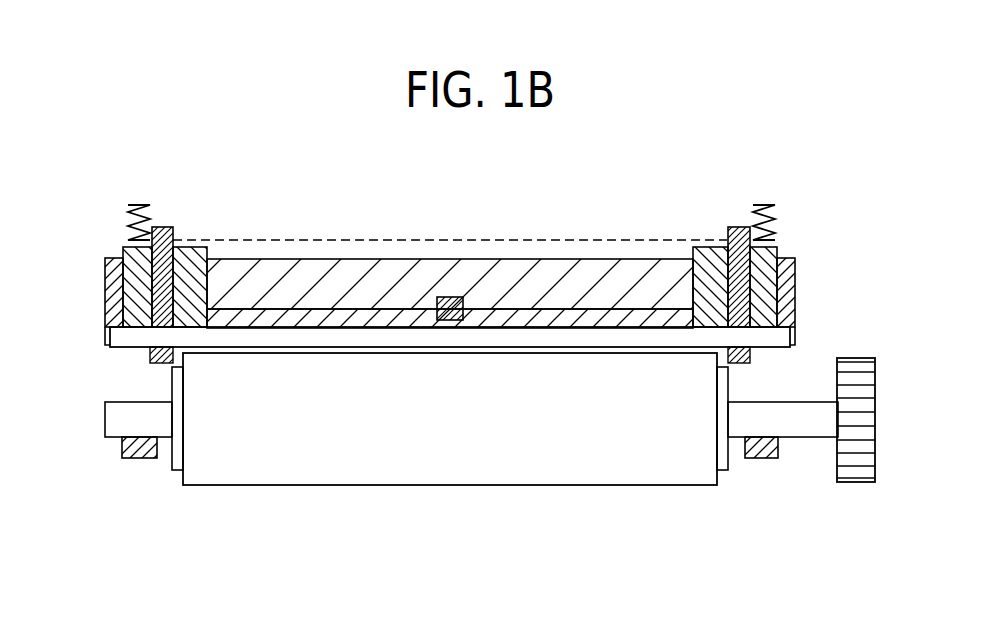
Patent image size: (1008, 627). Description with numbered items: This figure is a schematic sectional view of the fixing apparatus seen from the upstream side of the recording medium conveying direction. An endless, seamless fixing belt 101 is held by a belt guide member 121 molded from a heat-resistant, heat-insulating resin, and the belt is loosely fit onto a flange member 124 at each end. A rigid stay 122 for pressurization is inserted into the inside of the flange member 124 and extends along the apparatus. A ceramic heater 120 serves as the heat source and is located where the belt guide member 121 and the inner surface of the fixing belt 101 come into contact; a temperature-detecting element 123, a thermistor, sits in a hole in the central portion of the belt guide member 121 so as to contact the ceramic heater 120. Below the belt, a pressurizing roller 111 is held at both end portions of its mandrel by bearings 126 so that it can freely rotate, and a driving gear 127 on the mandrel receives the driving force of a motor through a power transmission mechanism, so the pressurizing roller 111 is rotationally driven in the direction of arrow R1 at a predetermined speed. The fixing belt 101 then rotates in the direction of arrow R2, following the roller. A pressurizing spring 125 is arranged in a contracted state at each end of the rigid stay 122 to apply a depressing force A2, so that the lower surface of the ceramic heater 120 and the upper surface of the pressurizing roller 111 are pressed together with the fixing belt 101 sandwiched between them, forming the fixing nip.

The fixing belt 101 is at (238, 237).
The pressurizing roller 111 is at (308, 486).
The ceramic heater 120 is at (140, 340).
The belt guide member 121 is at (620, 320).
The rigid stay for pressurization 122 is at (300, 290).
The temperature-detecting element (thermistor) 123 is at (472, 297).
The flange member 124 is at (158, 225).
The pressurizing spring 125 is at (128, 230).
The bearing 126 is at (143, 460).
The driving gear 127 is at (853, 357).
The depressing force A2 is at (138, 195).
The rotation direction of pressurizing roller R1 is at (367, 444).
The rotation direction of fixing belt R2 is at (367, 281).